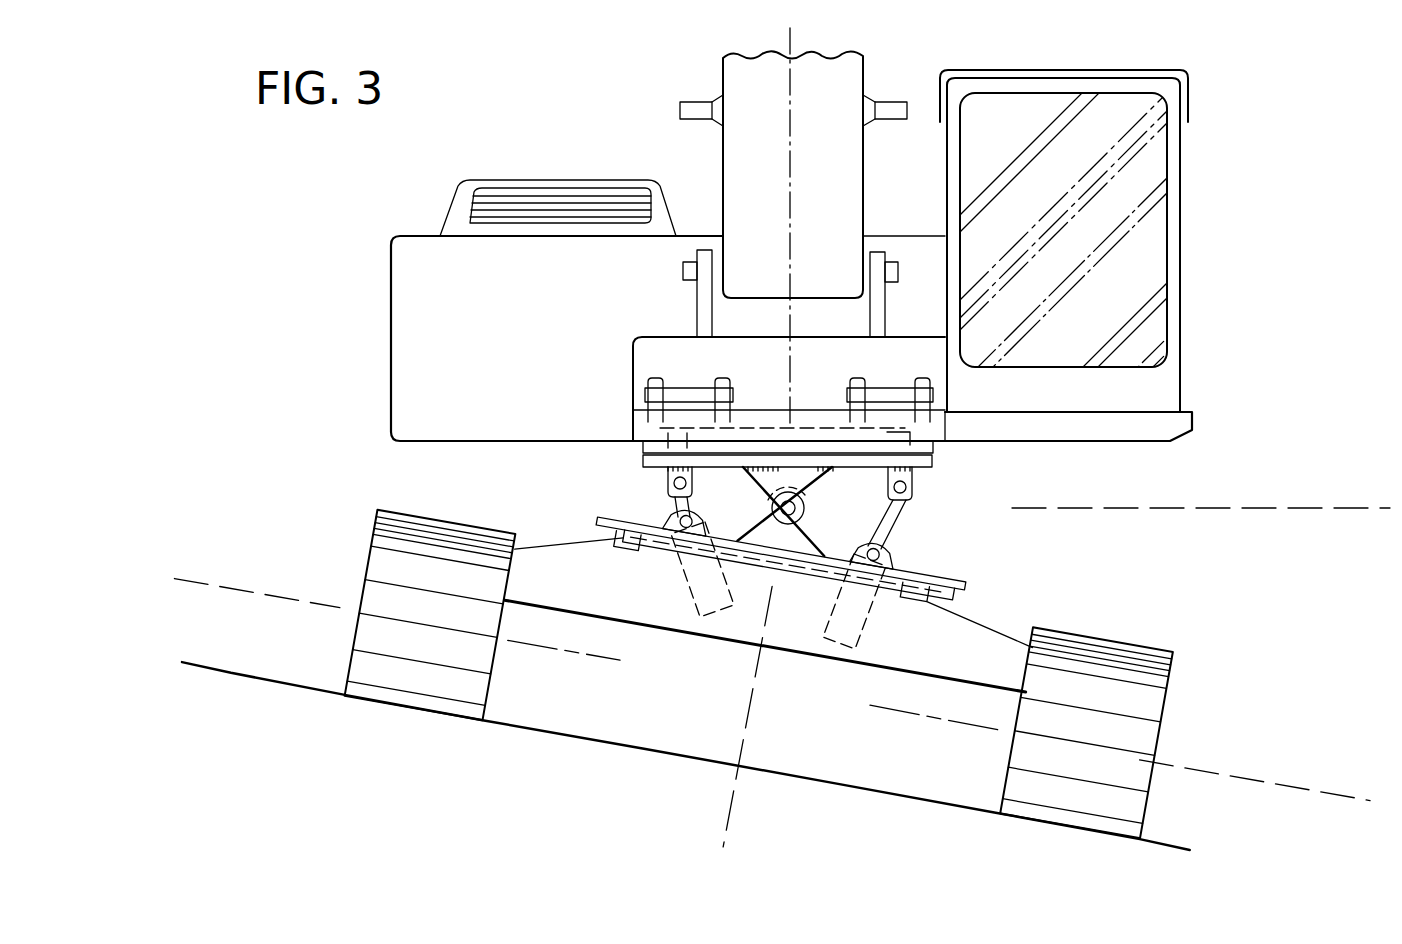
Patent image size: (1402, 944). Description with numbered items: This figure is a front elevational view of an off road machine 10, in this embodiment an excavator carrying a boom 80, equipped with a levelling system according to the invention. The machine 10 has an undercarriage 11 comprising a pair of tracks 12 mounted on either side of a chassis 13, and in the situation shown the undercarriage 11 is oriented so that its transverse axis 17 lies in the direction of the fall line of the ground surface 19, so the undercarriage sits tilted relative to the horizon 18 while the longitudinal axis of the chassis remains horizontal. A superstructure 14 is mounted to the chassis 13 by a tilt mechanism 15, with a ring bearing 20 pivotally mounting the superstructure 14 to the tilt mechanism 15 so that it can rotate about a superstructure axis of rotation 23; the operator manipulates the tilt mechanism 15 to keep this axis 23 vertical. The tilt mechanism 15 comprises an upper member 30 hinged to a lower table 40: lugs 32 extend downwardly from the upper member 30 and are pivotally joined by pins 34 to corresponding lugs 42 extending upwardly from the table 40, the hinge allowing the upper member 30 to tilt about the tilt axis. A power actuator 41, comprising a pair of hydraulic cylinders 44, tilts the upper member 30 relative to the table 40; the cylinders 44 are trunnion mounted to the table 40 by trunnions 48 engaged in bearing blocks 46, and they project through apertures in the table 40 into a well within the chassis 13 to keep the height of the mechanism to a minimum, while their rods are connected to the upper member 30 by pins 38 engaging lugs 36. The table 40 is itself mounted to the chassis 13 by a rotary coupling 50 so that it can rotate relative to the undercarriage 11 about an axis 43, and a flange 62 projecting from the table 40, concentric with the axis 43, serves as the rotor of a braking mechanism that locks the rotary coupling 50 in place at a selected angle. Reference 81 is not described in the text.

The off road machine 10 is at (1278, 128).
The undercarriage 11 is at (1045, 600).
The tracks 12 is at (402, 512).
The chassis 13 is at (730, 644).
The superstructure 14 is at (388, 247).
The tilt mechanism 15 is at (650, 500).
The transverse axis 17 is at (270, 588).
The horizon 18 is at (1215, 510).
The ground surface 19 is at (300, 685).
The ring bearing 20 is at (668, 432).
The superstructure axis of rotation 23 is at (788, 366).
The upper member 30 is at (932, 461).
The lugs 32 is at (816, 476).
The pins 34 is at (808, 508).
The lugs 36 is at (912, 486).
The pins 38 is at (898, 510).
The table 40 is at (598, 519).
The power actuator 41 is at (665, 495).
The lugs 42 is at (745, 498).
The axis 43 is at (728, 785).
The hydraulic cylinders 44 is at (688, 580).
The bearing blocks 46 is at (888, 546).
The trunnions 48 is at (886, 557).
The rotary coupling 50 is at (642, 545).
The flange 62 is at (962, 586).
The boom 80 is at (723, 148).
The mounting bolt 81 is at (683, 271).